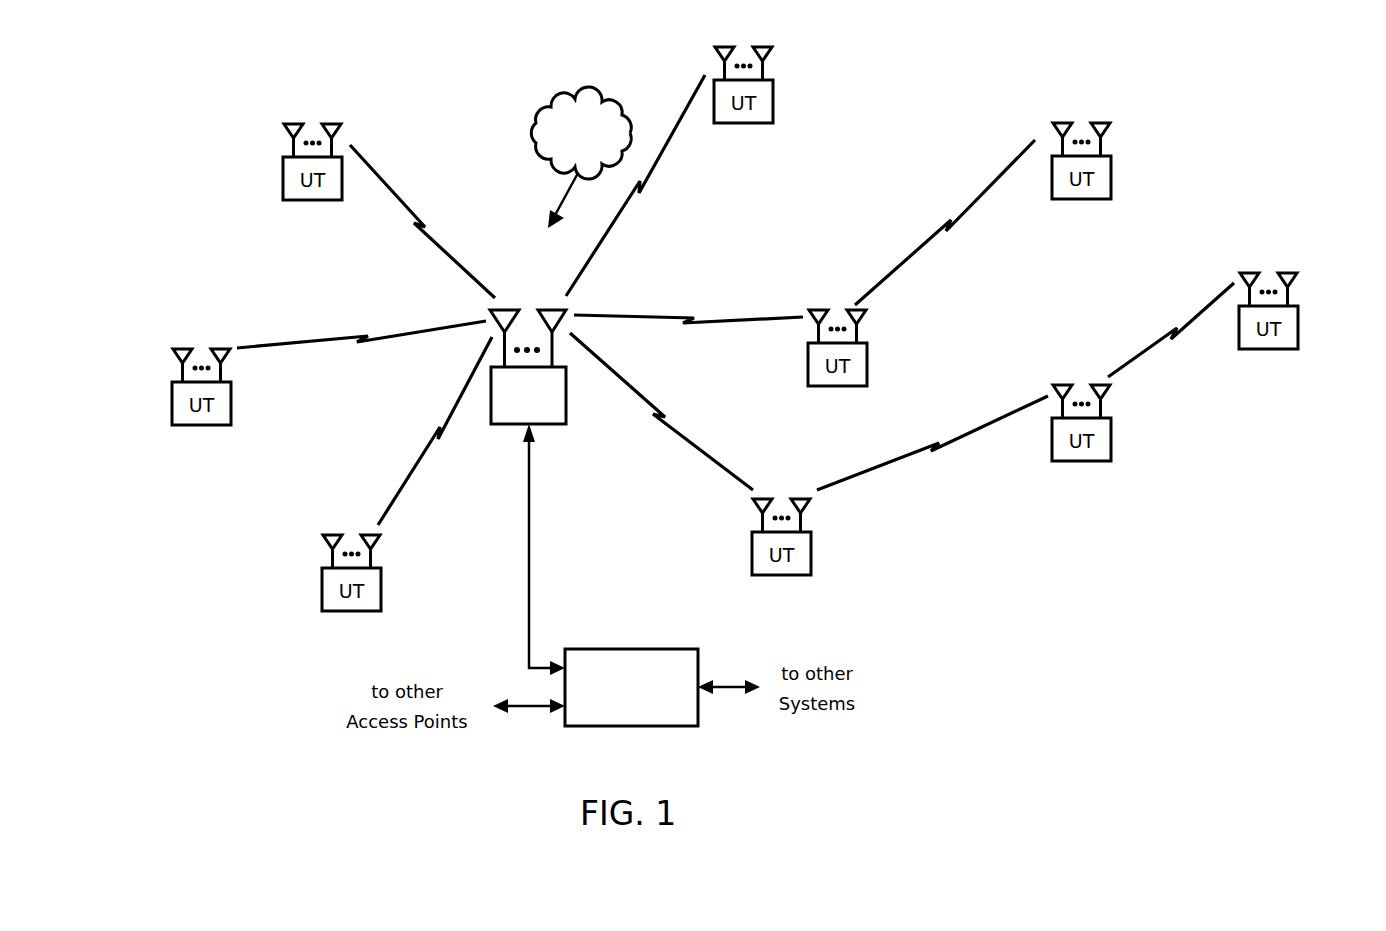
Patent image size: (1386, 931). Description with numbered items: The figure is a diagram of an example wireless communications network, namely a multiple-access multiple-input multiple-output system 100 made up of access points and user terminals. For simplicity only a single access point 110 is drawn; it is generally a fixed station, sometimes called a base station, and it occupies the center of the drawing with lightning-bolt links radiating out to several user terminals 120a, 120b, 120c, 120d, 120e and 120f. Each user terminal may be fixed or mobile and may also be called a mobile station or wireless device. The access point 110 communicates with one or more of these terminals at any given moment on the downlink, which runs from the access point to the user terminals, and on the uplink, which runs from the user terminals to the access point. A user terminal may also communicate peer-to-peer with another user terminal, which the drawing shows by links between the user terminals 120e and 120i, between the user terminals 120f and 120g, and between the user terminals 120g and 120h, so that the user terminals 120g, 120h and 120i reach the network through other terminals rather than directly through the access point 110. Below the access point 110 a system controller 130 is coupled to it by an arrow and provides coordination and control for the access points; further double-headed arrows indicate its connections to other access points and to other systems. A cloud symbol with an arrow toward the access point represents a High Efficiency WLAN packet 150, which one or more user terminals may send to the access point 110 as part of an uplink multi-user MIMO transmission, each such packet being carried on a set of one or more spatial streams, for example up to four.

The multiple-access MIMO system 100 is at (1288, 78).
The access point 110 is at (548, 426).
The user terminal 120a is at (322, 598).
The user terminal 120b is at (172, 413).
The user terminal 120c is at (283, 188).
The user terminal 120d is at (773, 112).
The user terminal 120e is at (808, 373).
The user terminal 120f is at (811, 562).
The user terminal 120g is at (1110, 450).
The user terminal 120h is at (1298, 338).
The user terminal 120i is at (1111, 188).
The system controller 130 is at (638, 634).
The High Efficiency WLAN (HEW) packet 150 is at (548, 110).